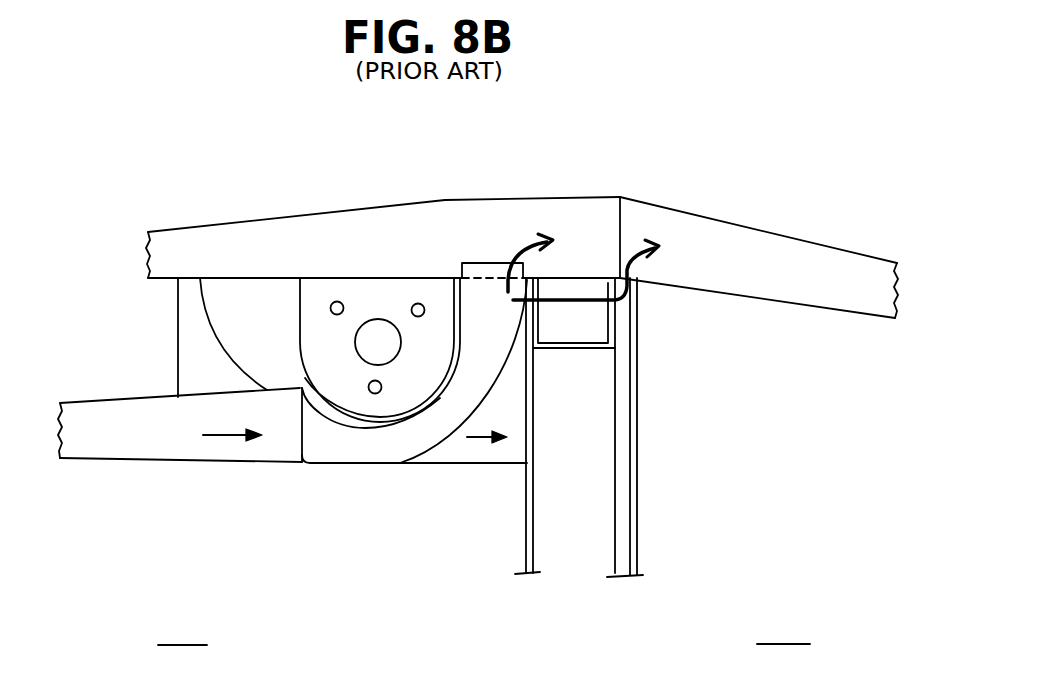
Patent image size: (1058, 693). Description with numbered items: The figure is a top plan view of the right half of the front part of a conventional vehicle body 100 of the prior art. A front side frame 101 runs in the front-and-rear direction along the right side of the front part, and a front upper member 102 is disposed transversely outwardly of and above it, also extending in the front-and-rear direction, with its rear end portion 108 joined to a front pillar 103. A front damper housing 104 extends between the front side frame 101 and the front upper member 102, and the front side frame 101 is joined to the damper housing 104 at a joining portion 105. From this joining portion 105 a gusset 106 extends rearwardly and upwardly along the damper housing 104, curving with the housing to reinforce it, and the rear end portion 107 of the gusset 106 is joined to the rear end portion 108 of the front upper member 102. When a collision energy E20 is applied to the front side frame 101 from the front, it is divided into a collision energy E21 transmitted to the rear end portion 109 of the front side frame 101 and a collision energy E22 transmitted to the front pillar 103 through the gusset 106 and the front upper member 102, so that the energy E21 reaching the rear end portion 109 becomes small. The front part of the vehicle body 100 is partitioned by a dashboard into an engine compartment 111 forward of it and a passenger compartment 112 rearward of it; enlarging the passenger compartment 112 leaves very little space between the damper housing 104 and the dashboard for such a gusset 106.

The vehicle body 100 is at (268, 110).
The front side frame 101 is at (93, 498).
The front upper member 102 is at (200, 194).
The front pillar 103 is at (735, 243).
The front damper housing 104 is at (358, 297).
The joining portion 105 is at (298, 440).
The gusset 106 is at (388, 478).
The rear end portion of gusset 107 is at (473, 262).
The rear end portion of front upper member 108 is at (507, 228).
The rear end portion of front side frame 109 is at (510, 410).
The engine compartment 111 is at (349, 462).
The passenger compartment 112 is at (708, 461).
The collision energy E20 is at (195, 434).
The collision energy E21 is at (479, 466).
The collision energy E22 is at (583, 253).